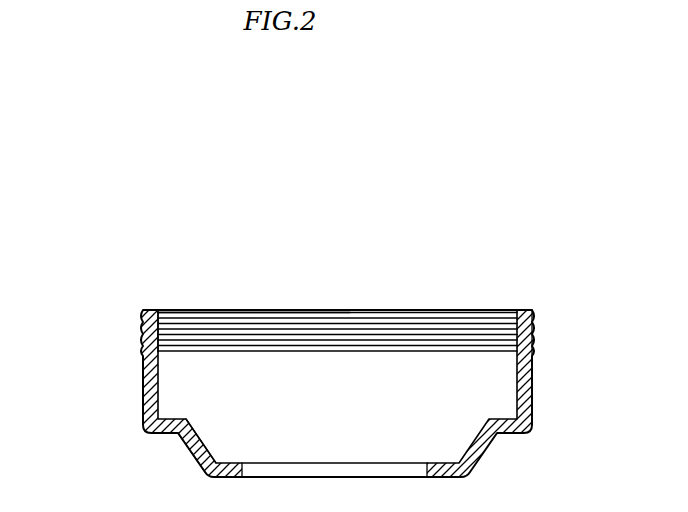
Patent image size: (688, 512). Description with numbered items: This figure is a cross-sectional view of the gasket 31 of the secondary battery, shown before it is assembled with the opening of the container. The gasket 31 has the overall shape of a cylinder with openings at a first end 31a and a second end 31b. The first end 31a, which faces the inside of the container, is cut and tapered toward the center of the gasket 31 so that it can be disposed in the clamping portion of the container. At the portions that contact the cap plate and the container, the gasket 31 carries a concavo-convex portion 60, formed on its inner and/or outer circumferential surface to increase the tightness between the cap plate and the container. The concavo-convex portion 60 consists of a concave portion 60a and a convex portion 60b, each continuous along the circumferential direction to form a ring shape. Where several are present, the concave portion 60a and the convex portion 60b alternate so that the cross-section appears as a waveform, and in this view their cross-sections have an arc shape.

The gasket 31 is at (143, 379).
The first end 31a is at (195, 447).
The second end 31b is at (536, 311).
The concavo-convex portion 60 is at (150, 262).
The concave portion 60a is at (176, 317).
The convex portion 60b is at (163, 313).